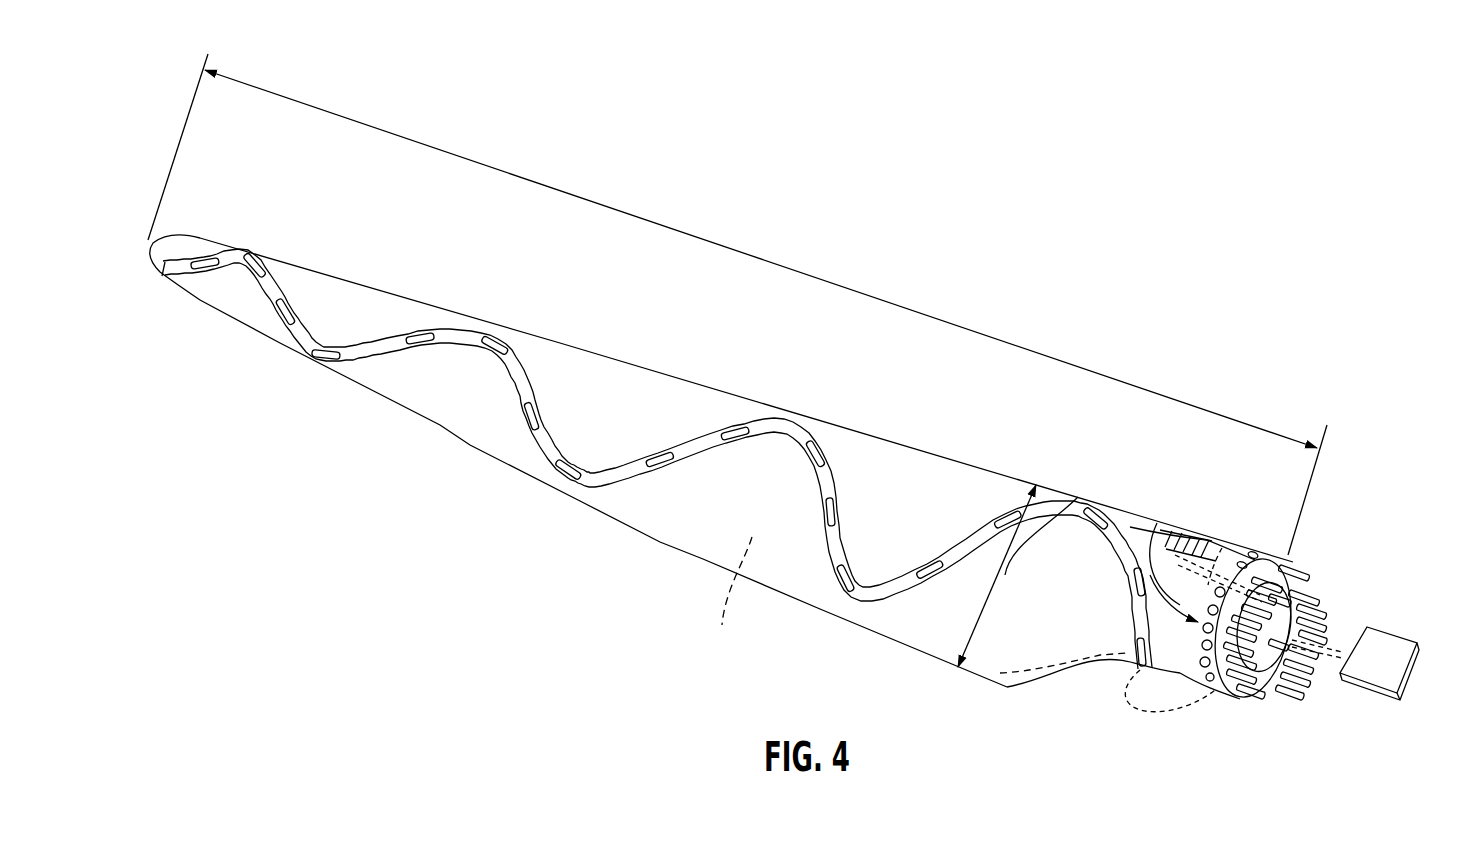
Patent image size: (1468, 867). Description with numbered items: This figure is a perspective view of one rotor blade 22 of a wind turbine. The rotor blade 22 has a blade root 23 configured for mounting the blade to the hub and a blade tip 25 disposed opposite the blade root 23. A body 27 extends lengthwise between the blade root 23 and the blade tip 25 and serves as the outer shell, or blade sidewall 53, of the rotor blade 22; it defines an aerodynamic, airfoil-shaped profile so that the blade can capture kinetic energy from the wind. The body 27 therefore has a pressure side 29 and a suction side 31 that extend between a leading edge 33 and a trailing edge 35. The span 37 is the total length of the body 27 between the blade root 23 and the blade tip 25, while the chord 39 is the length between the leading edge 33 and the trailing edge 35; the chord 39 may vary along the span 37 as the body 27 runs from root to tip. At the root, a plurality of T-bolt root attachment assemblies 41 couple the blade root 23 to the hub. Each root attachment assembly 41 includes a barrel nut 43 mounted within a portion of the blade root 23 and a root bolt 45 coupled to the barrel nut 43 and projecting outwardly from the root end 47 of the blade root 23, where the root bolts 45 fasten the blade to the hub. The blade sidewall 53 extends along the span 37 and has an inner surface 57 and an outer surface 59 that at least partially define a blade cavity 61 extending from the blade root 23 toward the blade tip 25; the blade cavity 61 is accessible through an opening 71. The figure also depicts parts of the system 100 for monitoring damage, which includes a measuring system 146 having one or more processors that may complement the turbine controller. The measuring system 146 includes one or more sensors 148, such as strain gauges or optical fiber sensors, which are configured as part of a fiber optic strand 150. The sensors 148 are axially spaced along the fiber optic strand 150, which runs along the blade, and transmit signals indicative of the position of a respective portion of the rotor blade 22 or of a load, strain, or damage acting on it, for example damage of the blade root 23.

The rotor blade 22 is at (1112, 314).
The blade root 23 is at (1205, 678).
The blade tip 25 is at (146, 252).
The body 27 is at (602, 375).
The pressure side 29 is at (915, 605).
The suction side 31 is at (450, 405).
The leading edge 33 is at (818, 418).
The trailing edge 35 is at (577, 501).
The span 37 is at (767, 256).
The chord 39 is at (1003, 550).
The root attachment assembly 41 is at (1205, 590).
The barrel nut 43 is at (1222, 548).
The root bolt 45 is at (1330, 592).
The root end 47 is at (1245, 703).
The blade sidewall 53 is at (317, 270).
The inner surface 57 is at (1268, 700).
The outer surface 59 is at (1290, 570).
The blade cavity 61 is at (1298, 624).
The opening 71 is at (1302, 648).
The system for monitoring damage 100 is at (867, 612).
The measuring system 146 is at (1408, 673).
The sensors 148 is at (495, 353).
The fiber optic strand 150 is at (293, 338).